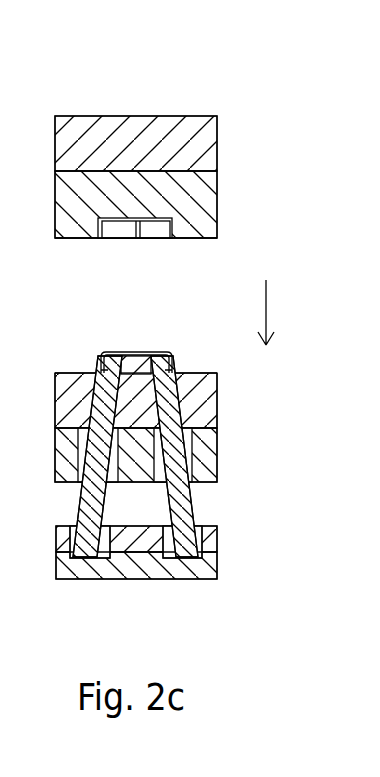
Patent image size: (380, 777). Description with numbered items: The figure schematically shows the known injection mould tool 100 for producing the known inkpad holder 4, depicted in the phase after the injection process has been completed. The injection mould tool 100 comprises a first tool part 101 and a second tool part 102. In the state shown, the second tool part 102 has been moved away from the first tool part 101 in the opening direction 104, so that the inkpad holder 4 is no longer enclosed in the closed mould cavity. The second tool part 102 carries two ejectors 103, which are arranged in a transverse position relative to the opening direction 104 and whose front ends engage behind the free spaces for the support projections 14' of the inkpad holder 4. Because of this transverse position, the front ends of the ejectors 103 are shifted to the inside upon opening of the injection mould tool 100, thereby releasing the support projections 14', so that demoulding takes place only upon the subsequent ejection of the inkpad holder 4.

The injection mould tool 100 is at (226, 93).
The first tool part 101 is at (244, 185).
The second tool part 102 is at (246, 402).
The ejectors 103 is at (379, 497).
The opening direction 104 is at (266, 313).
The inkpad holder 4 is at (87, 342).
The support projections 14' is at (136, 334).